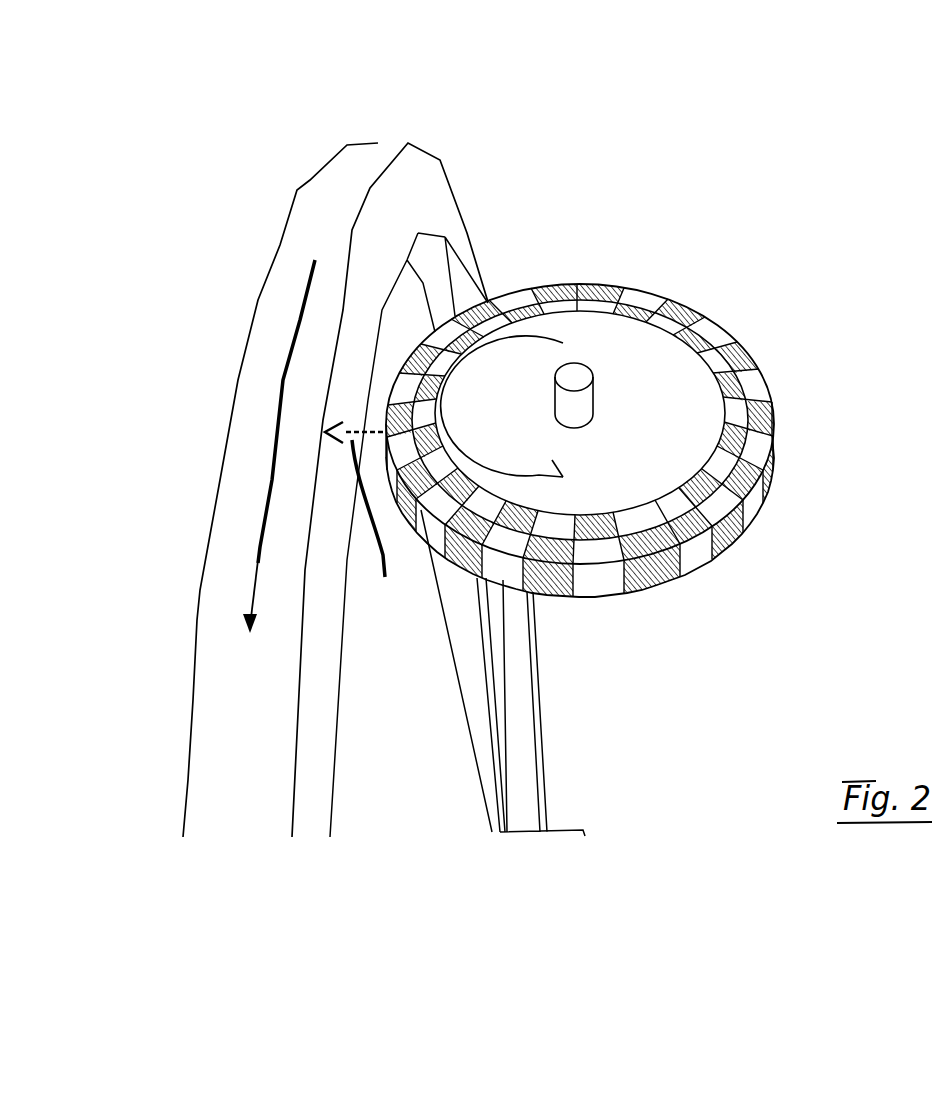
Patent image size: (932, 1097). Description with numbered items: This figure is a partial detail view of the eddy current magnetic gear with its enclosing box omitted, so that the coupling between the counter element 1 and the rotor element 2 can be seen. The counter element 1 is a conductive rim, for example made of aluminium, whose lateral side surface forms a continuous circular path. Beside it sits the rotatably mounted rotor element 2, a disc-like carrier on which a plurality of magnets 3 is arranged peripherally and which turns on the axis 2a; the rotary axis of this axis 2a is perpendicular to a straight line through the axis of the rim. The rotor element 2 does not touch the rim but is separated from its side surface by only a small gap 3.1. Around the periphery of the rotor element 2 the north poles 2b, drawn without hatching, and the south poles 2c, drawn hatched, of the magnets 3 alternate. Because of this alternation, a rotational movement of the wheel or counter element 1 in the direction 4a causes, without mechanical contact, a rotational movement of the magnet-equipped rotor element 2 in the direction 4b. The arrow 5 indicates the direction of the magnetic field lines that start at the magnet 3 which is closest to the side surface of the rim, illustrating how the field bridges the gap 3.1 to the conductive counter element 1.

The counter element 1 is at (259, 300).
The rotor element 2 is at (638, 350).
The axis 2a is at (578, 379).
The north poles 2b is at (767, 382).
The south poles 2c is at (776, 420).
The magnets 3 is at (608, 272).
The gap 3.1 is at (380, 396).
The direction of rotational movement of the counter element 4a is at (262, 562).
The direction of rotational movement of the rotor element 4b is at (567, 480).
The arrow indicating direction of magnetic field lines 5 is at (362, 510).